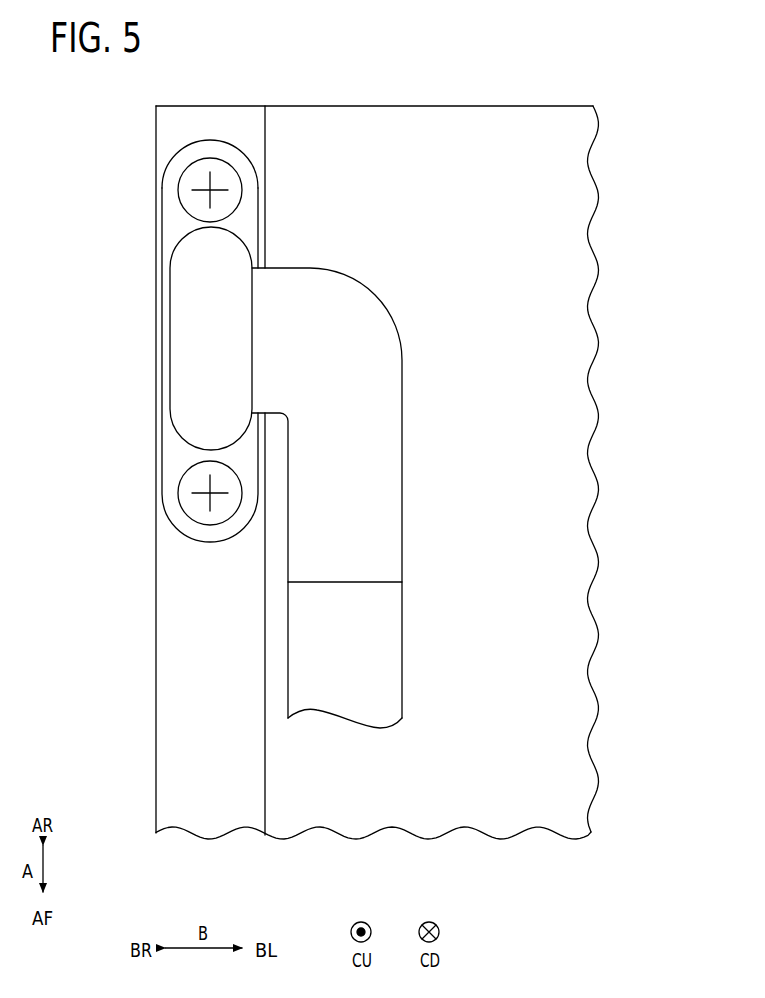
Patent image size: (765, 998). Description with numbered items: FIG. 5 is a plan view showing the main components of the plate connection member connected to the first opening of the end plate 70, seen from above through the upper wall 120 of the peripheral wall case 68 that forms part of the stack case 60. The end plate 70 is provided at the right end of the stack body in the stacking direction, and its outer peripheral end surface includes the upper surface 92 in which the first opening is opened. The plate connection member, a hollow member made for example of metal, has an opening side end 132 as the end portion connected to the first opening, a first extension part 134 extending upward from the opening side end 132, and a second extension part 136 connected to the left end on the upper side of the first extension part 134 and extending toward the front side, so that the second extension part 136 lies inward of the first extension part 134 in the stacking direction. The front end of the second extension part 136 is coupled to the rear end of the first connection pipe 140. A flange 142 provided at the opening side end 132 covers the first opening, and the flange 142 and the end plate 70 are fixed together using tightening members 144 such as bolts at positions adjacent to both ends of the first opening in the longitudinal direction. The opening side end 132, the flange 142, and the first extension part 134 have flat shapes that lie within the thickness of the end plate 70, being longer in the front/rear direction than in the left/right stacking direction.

The stack case 60 is at (377, 90).
The peripheral wall case 68 is at (565, 167).
The end plate 70 is at (177, 733).
The upper surface 92 is at (177, 662).
The upper wall 120 is at (450, 120).
The opening side end 132 is at (170, 285).
The first extension part 134 is at (185, 320).
The second extension part 136 is at (368, 330).
The first connection pipe 140 is at (388, 637).
The flange 142 is at (242, 216).
The tightening members 144 is at (225, 177).